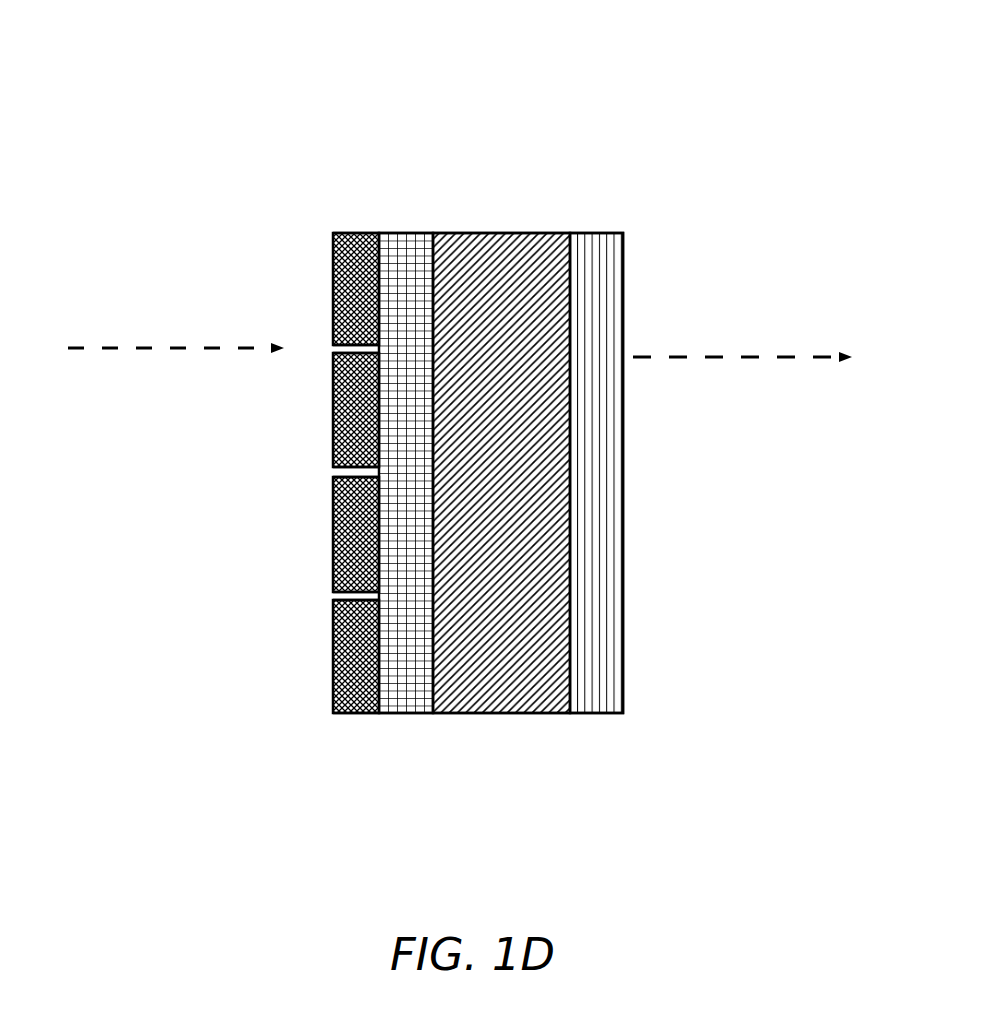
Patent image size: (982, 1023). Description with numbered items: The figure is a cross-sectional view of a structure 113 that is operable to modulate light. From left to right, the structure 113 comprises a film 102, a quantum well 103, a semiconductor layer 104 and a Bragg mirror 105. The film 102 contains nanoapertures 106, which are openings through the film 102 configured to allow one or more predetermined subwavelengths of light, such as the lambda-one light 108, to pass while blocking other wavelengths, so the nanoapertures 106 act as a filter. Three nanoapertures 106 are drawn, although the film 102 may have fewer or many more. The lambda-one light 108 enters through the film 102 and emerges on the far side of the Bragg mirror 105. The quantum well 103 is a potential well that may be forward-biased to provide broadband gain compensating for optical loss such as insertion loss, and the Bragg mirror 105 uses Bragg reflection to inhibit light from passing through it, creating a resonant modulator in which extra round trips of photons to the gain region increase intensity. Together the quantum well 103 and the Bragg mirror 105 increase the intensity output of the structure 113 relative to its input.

The structure 113 is at (524, 30).
The film 102 is at (358, 232).
The quantum well 103 is at (402, 232).
The semiconductor layer 104 is at (512, 752).
The Bragg mirror 105 is at (620, 676).
The nanoapertures 106 is at (318, 349).
The light of wavelength λ1 108 is at (456, 325).